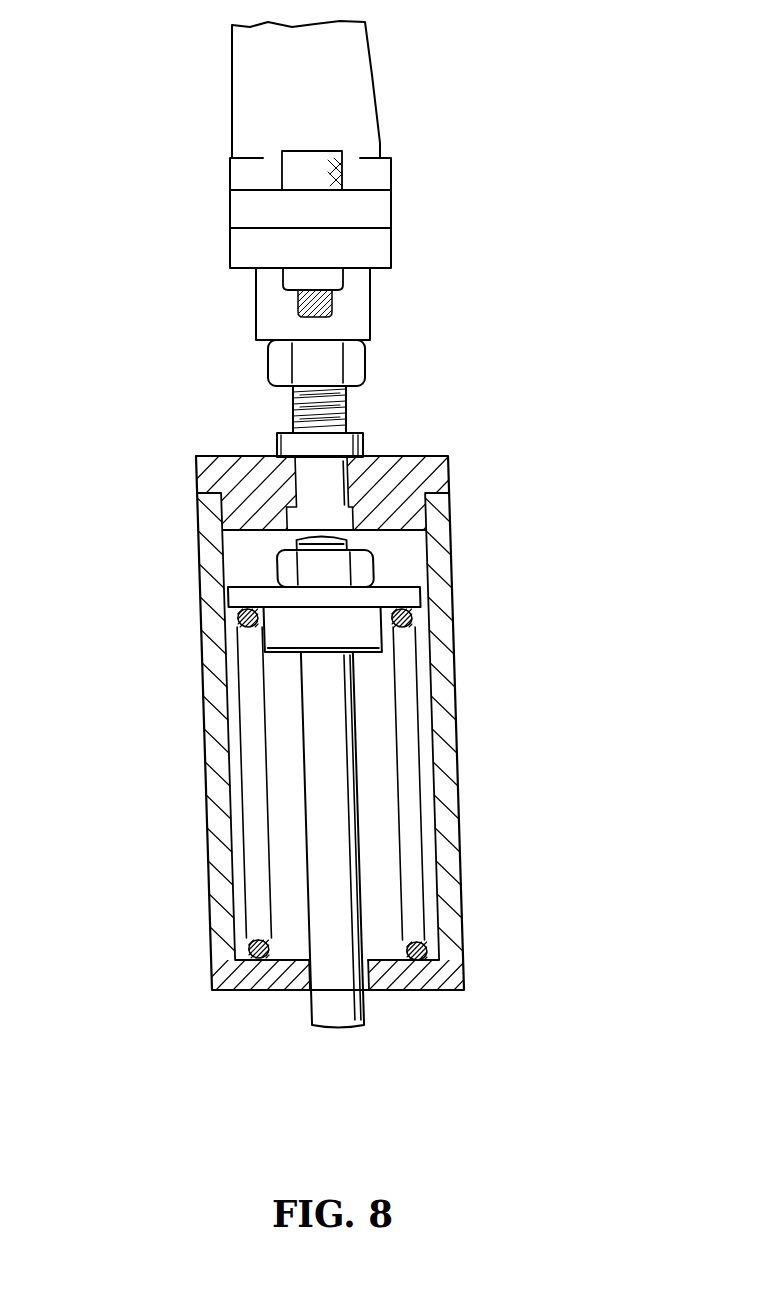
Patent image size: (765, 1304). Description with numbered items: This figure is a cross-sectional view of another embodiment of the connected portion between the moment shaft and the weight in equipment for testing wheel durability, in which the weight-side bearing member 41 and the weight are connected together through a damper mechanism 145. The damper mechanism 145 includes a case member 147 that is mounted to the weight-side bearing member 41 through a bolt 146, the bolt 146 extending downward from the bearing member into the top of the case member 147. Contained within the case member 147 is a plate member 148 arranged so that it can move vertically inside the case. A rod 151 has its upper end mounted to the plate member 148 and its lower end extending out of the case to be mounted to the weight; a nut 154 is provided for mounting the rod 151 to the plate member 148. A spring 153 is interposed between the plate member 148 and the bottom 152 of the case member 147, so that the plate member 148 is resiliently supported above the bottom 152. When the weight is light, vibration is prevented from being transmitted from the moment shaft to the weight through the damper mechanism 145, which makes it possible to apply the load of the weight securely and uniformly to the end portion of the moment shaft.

The weight-side bearing member 41 is at (232, 117).
The bolt 146 is at (290, 408).
The case member 147 is at (197, 548).
The plate member 148 is at (412, 588).
The rod 151 is at (371, 832).
The bottom of the case member 152 is at (287, 942).
The spring 153 is at (418, 946).
The nut 154 is at (378, 541).
The damper mechanism 145 is at (325, 791).